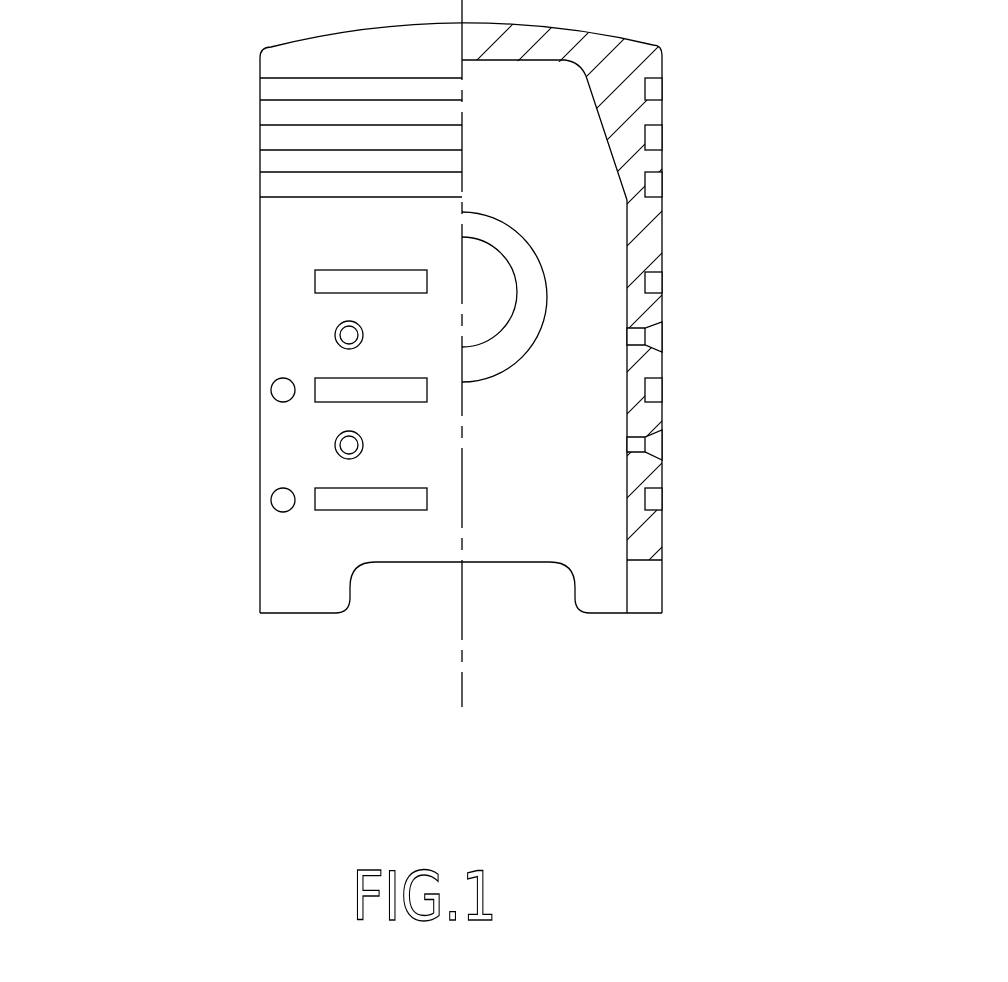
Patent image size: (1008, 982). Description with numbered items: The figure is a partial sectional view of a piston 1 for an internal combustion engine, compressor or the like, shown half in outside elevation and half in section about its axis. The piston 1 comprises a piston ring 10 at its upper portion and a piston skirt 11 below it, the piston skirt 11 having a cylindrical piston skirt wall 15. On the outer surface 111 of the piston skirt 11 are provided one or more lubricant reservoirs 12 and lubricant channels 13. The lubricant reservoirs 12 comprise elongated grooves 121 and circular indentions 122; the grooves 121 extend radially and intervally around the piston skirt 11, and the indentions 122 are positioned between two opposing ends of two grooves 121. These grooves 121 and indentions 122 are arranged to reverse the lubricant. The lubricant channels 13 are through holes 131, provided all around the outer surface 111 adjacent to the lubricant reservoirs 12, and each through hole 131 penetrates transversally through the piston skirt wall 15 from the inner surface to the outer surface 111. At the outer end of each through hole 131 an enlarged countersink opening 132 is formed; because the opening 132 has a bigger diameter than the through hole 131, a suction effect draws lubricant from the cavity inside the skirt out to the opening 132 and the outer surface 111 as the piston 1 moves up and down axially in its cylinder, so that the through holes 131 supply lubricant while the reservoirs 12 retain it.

The piston 1 is at (538, 628).
The piston ring 10 is at (238, 146).
The piston skirt 11 is at (215, 538).
The outer surface 111 is at (667, 228).
The lubricant reservoir 12 is at (472, 347).
The groove 121 is at (343, 280).
The indention 122 is at (275, 385).
The lubricant channel 13 is at (518, 362).
The through hole 131 is at (345, 440).
The countersink opening 132 is at (345, 452).
The piston skirt wall 15 is at (652, 538).